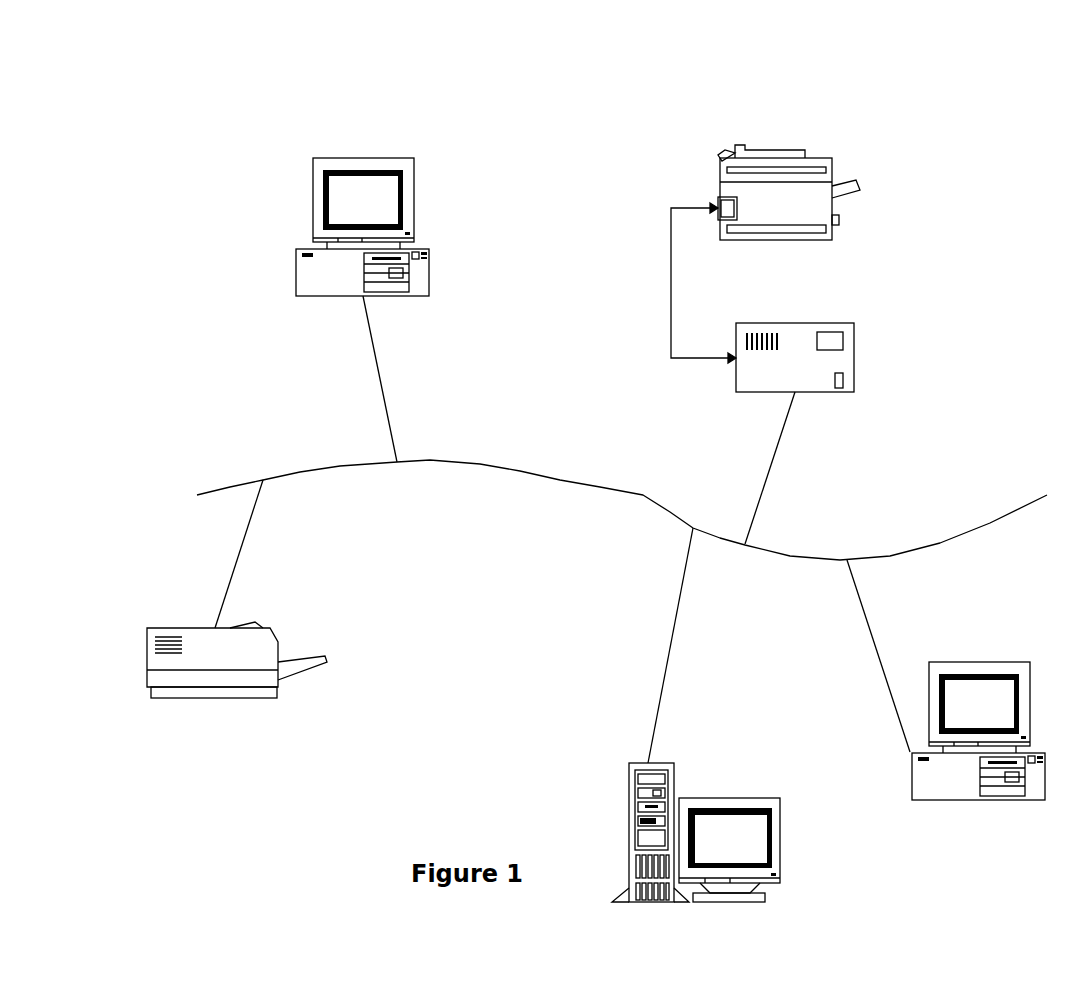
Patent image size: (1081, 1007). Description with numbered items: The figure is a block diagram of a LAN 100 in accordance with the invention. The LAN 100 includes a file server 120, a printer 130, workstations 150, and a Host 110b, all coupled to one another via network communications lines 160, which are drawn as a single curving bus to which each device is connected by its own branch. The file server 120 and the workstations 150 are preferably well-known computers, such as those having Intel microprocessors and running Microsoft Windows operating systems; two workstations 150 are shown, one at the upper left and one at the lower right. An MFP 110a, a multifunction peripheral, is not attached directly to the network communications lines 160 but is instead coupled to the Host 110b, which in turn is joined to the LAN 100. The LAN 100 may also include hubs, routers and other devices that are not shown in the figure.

The LAN 100 is at (226, 416).
The MFP 110a is at (787, 145).
The Host 110b is at (794, 323).
The file server 120 is at (730, 798).
The printer 130 is at (212, 698).
The workstations 150 is at (363, 158).
The network communications lines 160 is at (562, 483).